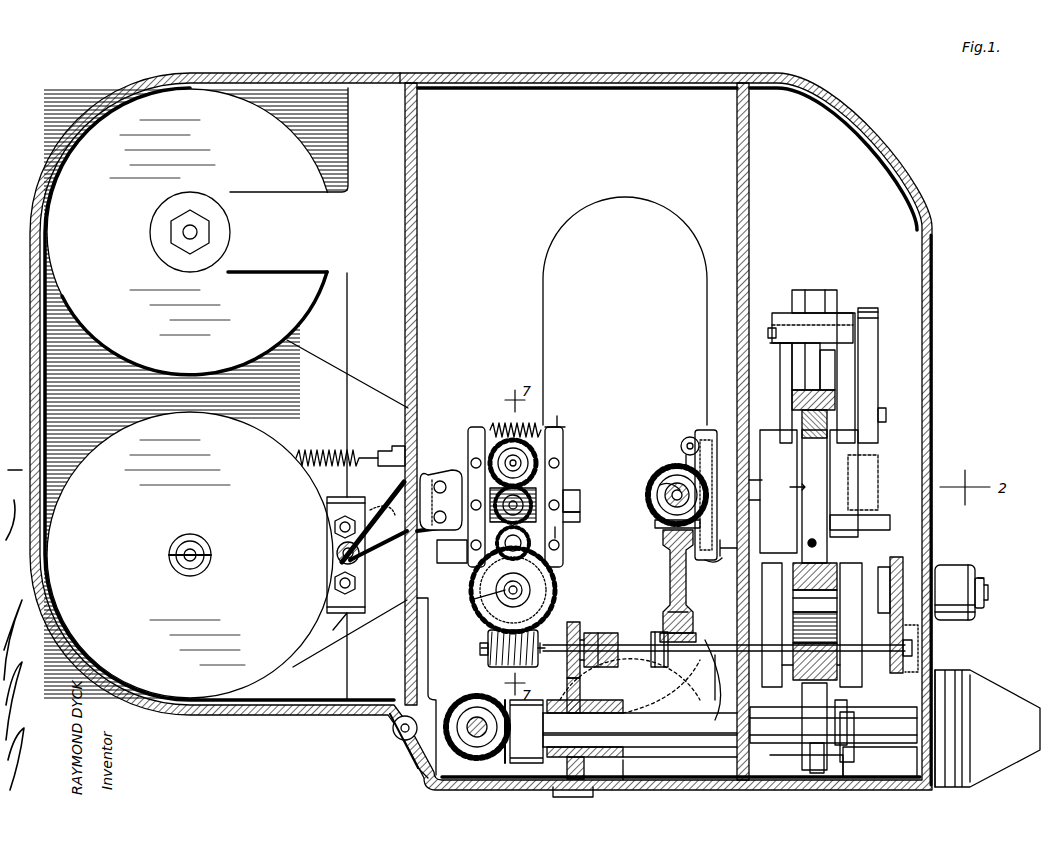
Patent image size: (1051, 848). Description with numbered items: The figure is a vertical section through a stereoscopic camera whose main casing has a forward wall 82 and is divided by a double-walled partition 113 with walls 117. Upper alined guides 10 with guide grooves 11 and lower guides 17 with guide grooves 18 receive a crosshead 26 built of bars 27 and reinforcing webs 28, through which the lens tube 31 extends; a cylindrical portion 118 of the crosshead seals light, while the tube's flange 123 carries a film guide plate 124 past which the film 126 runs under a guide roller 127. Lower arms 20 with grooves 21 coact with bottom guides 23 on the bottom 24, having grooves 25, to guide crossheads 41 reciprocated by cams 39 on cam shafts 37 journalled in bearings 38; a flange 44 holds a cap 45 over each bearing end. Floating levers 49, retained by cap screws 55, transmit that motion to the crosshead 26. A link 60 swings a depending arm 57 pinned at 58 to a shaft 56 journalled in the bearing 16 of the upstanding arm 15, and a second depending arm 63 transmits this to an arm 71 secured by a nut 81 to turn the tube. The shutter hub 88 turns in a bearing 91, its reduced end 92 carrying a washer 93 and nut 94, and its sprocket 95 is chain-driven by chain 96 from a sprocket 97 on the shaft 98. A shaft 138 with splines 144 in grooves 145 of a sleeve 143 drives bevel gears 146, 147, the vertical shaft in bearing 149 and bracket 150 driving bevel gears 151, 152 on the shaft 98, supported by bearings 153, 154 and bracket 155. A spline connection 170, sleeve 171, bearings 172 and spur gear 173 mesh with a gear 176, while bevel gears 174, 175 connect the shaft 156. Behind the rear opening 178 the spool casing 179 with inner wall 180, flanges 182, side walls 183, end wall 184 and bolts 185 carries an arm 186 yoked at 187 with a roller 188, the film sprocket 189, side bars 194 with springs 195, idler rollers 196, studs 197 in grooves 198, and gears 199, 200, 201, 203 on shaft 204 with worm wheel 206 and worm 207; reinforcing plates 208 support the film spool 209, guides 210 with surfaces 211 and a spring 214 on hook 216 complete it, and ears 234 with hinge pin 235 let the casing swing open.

The upper alined guides 10 is at (825, 392).
The guide groove 11 is at (800, 418).
The upstanding arm 15 is at (823, 368).
The bearing 16 is at (800, 300).
The lower guides 17 is at (815, 601).
The guide groove 18 is at (805, 560).
The lower arm 20 is at (782, 668).
The guide groove 21 is at (810, 720).
The lower parallel guide 23 is at (860, 768).
The bottom 24 is at (696, 777).
The guide groove 25 is at (817, 760).
The crosshead 26 is at (785, 485).
The upper and lower bars 27 is at (813, 478).
The reinforcing webs 28 is at (828, 465).
The lens tube 31 is at (846, 522).
The cam shafts 37 is at (718, 712).
The bearing 38 is at (878, 712).
The cams 39 is at (854, 730).
The crossheads 41 is at (802, 727).
The annular flange 44 is at (942, 680).
The cap 45 is at (998, 700).
The floating levers 49 is at (722, 645).
The cap screws 55 is at (813, 625).
The shaft 56 is at (770, 330).
The depending arm 57 is at (780, 368).
The pin 58 is at (776, 345).
The link 60 is at (778, 491).
The second depending arm 63 is at (845, 313).
The arm 71 is at (878, 388).
The nut 81 is at (886, 413).
The forward wall 82 is at (932, 278).
The hub 88 is at (903, 565).
The bearing 91 is at (946, 568).
The reduced end 92 is at (984, 593).
The cup shaped washer 93 is at (978, 578).
The nut 94 is at (988, 580).
The sprocket 95 is at (890, 560).
The chain 96 is at (912, 648).
The sprocket 97 is at (949, 648).
The shaft 98 is at (721, 677).
The partition 113 is at (737, 183).
The double wall 117 is at (770, 495).
The cylindrical portion 118 is at (767, 430).
The flange 123 is at (722, 555).
The film guide plate 124 is at (706, 565).
The film 126 is at (707, 260).
The guide roller 127 is at (666, 428).
The shaft 138 is at (655, 524).
The rotatable sleeve 143 is at (683, 440).
The splines 144 is at (686, 462).
The grooves 145 is at (646, 491).
The bevel gear 146 is at (652, 475).
The bevel gear 147 is at (663, 548).
The bearing 149 is at (668, 600).
The bracket 150 is at (658, 607).
The bevel gear 151 is at (668, 664).
The bevel gear 152 is at (618, 662).
The bearing 153 is at (814, 640).
The bearing 154 is at (580, 633).
The bracket 155 is at (607, 667).
The shaft 156 is at (422, 770).
The spline connection 170 is at (662, 712).
The sleeve 171 is at (624, 705).
The bearings 172 is at (630, 766).
The spur gear 173 is at (584, 762).
The bevel gear 174 is at (505, 712).
The bevel gear 175 is at (455, 700).
The gear 176 is at (580, 622).
The vertical opening 178 is at (404, 73).
The auxiliary film spool casing 179 is at (305, 73).
The inner wall 180 is at (417, 150).
The parallel flanges 182 is at (448, 450).
The side walls 183 is at (580, 496).
The end wall 184 is at (378, 452).
The bolts 185 is at (432, 470).
The arm 186 is at (398, 556).
The yoke 187 is at (372, 522).
The roller 188 is at (337, 551).
The film sprocket 189 is at (560, 420).
The side bars 194 is at (560, 447).
The tension springs 195 is at (495, 422).
The idler rollers 196 is at (578, 548).
The stud 197 is at (563, 530).
The groove 198 is at (580, 511).
The gear 199 is at (563, 478).
The gear 200 is at (560, 560).
The intermediate gear 201 is at (563, 490).
The lower gear 203 is at (475, 608).
The shaft 204 is at (478, 612).
The worm wheel 206 is at (484, 648).
The worm 207 is at (482, 656).
The reinforcing plates 208 is at (230, 232).
The upper film spool 209 is at (200, 231).
The parallel guides 210 is at (330, 640).
The V-shaped guide surfaces 211 is at (335, 497).
The tension spring 214 is at (308, 452).
The stationary hook 216 is at (368, 425).
The ears 234 is at (402, 752).
The hinge pin 235 is at (393, 732).